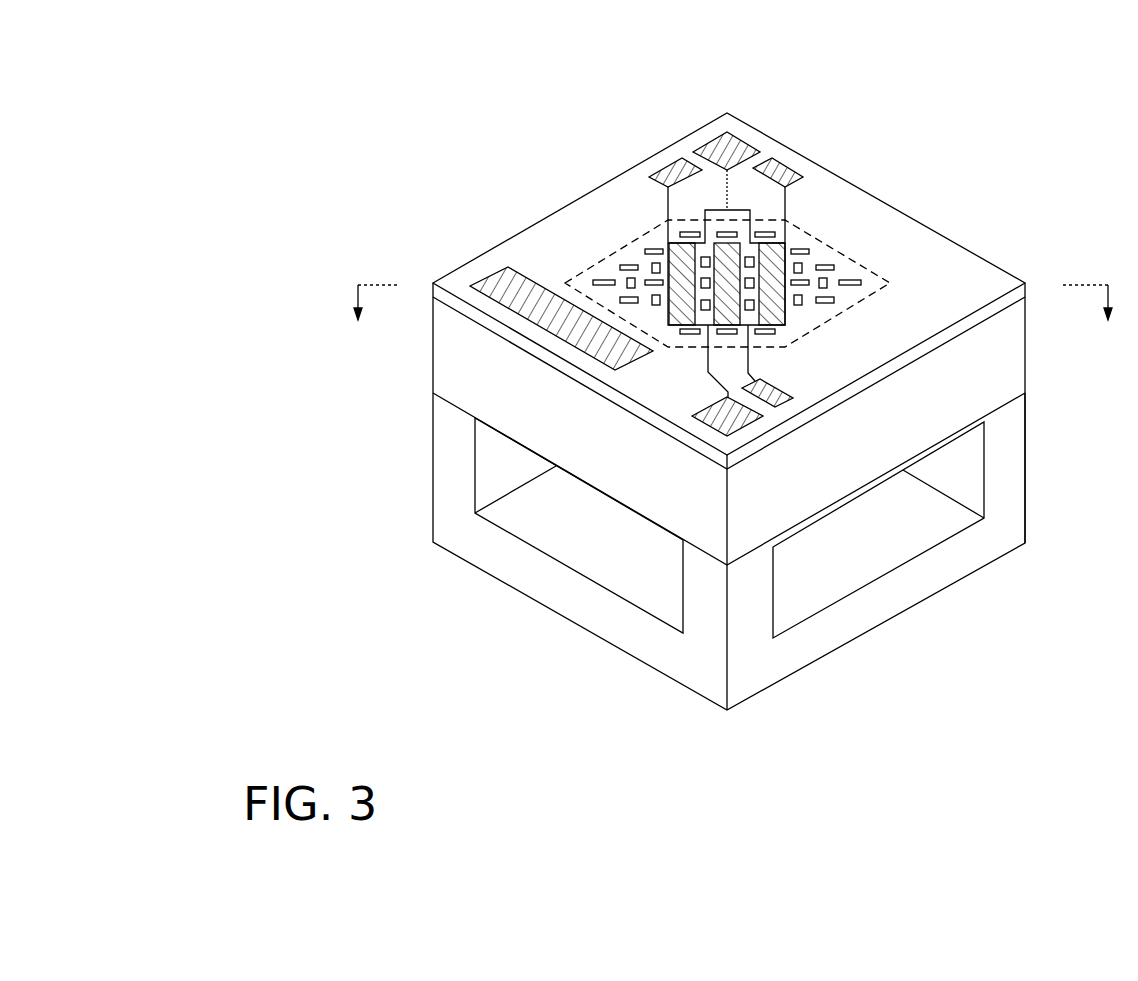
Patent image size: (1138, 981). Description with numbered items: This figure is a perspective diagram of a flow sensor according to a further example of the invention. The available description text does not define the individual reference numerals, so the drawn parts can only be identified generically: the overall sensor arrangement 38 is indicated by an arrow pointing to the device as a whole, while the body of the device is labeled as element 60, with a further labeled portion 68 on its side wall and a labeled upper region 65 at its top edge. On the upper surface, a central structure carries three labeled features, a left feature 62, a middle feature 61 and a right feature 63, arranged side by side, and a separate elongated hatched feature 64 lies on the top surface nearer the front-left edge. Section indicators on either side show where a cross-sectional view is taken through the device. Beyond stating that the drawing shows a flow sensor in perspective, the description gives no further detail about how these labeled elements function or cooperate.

The sensor device 38 is at (742, 362).
The housing frame 60 is at (951, 443).
The center electrode 61 is at (710, 326).
The left electrode 62 is at (667, 243).
The right electrode 63 is at (783, 326).
The electrode pad 64 is at (498, 287).
The substrate plate 65 is at (1030, 281).
The side wall 68 is at (1028, 511).